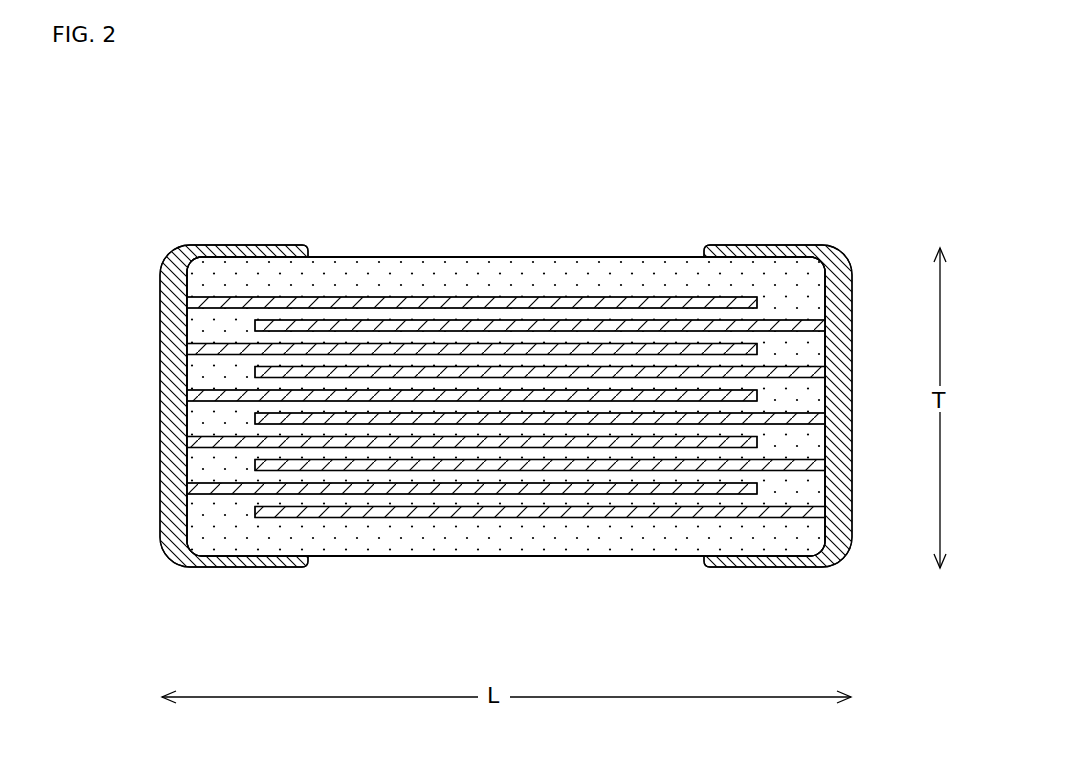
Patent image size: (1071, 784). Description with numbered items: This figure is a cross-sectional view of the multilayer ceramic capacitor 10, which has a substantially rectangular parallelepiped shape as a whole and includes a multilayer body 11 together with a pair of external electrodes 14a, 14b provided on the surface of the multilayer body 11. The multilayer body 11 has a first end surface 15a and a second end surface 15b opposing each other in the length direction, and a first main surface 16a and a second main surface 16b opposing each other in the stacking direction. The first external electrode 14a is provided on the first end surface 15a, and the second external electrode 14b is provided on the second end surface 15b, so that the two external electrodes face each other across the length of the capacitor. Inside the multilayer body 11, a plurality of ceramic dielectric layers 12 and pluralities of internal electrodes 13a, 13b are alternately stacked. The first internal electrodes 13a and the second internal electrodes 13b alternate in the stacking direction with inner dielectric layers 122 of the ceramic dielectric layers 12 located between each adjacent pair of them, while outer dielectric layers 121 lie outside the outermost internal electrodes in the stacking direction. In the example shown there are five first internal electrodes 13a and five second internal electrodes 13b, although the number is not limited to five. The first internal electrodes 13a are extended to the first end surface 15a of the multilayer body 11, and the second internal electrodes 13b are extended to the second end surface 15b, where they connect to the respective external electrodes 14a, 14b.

The multilayer ceramic capacitor 10 is at (741, 204).
The multilayer body 11 is at (677, 256).
The ceramic dielectric layers 12 is at (506, 391).
The outer dielectric layers 121 is at (412, 272).
The inner dielectric layers 122 is at (556, 342).
The first internal electrodes 13a is at (630, 345).
The second internal electrodes 13b is at (590, 465).
The first external electrode 14a is at (160, 383).
The second external electrode 14b is at (852, 348).
The first end surface 15a is at (185, 320).
The second end surface 15b is at (827, 301).
The first main surface 16a is at (343, 256).
The second main surface 16b is at (370, 558).